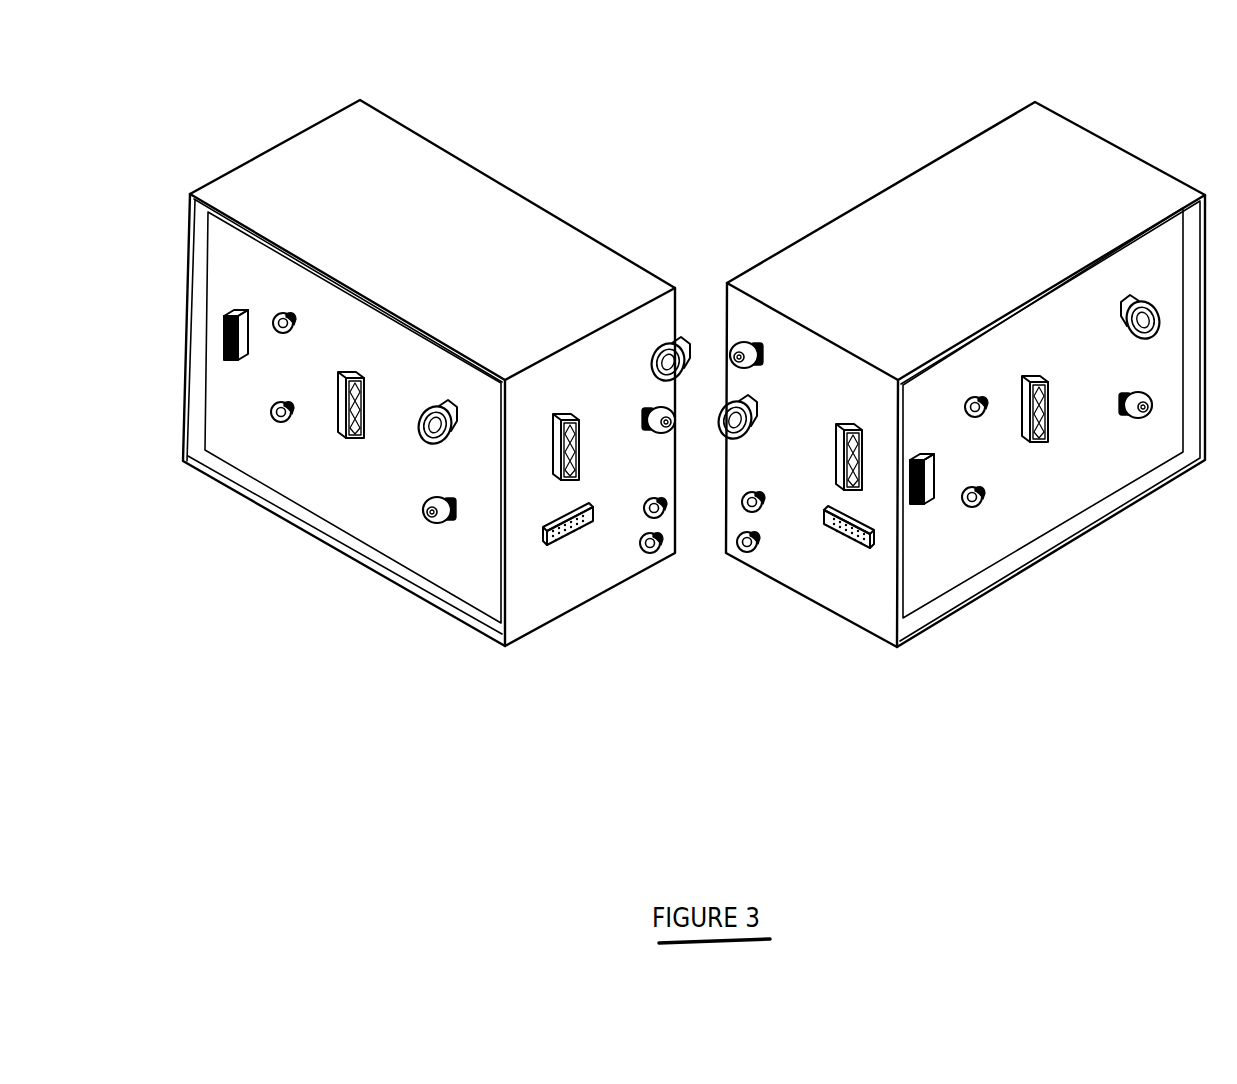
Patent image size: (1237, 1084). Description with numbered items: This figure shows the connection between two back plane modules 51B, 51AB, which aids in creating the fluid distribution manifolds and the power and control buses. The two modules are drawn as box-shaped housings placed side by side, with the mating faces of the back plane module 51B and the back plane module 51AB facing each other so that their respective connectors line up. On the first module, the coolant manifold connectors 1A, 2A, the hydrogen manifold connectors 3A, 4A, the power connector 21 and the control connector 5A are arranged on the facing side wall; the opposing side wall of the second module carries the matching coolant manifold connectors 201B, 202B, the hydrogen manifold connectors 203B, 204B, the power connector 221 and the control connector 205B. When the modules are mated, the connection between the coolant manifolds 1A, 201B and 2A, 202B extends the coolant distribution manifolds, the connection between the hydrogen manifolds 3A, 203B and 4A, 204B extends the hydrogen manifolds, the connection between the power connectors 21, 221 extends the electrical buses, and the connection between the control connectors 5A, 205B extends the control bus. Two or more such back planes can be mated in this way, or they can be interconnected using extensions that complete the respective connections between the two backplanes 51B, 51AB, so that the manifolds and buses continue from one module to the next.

The back plane module 51B is at (383, 96).
The back plane module 51AB is at (1027, 97).
The power connector 21 is at (563, 417).
The coolant manifold connector 1A is at (687, 350).
The coolant manifold connector 2A is at (672, 425).
The hydrogen manifold connector 3A is at (664, 508).
The hydrogen manifold connector 4A is at (660, 548).
The control connector 5A is at (548, 545).
The coolant manifold connector 201B is at (735, 340).
The coolant manifold connector 202B is at (757, 412).
The hydrogen manifold connector 203B is at (760, 502).
The hydrogen manifold connector 204B is at (757, 545).
The control connector 205B is at (865, 542).
The power connector 221 is at (853, 490).